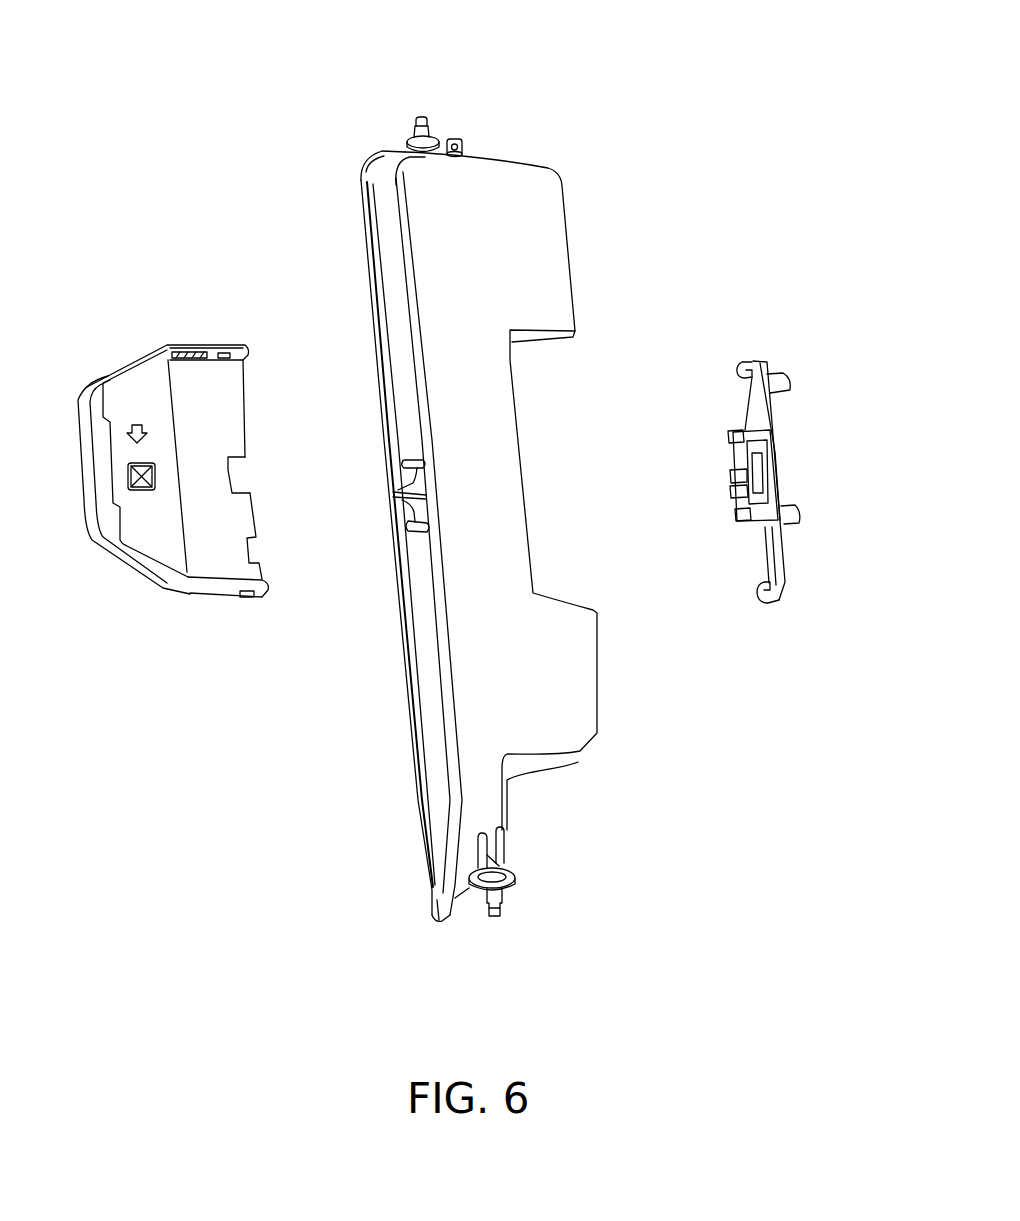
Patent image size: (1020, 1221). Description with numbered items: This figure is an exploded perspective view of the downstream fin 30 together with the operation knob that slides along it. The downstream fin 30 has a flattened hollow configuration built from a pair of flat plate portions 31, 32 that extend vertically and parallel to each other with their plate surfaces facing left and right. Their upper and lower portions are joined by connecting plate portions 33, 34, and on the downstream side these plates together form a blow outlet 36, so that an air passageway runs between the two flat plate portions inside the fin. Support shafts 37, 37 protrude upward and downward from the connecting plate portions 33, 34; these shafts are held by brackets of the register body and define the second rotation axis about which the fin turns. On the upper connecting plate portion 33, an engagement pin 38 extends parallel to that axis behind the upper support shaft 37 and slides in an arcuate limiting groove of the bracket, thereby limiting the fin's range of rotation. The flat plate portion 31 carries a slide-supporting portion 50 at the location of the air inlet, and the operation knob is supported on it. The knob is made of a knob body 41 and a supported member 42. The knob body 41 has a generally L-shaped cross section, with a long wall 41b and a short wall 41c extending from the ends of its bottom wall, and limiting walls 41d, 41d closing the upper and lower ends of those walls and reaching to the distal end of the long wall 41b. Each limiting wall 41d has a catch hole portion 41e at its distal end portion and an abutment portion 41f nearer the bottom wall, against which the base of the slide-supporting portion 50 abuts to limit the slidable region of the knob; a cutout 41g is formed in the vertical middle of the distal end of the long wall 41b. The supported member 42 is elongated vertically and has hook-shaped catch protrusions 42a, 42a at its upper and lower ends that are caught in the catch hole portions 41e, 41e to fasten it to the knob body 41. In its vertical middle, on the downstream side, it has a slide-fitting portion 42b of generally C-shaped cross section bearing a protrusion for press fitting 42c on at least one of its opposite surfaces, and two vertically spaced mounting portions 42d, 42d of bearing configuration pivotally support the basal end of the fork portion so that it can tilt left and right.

The downstream fin 30 is at (542, 131).
The flat plate portion 31 is at (421, 200).
The flat plate portion 32 is at (372, 229).
The connecting plate portion 33 is at (372, 160).
The connecting plate portion 34 is at (459, 848).
The blow outlet 36 is at (388, 273).
The support shaft 37 is at (432, 122).
The engagement pin 38 is at (456, 139).
The slide-supporting portion 50 is at (407, 457).
The knob body 41 is at (128, 350).
The long wall 41b is at (204, 560).
The short wall 41c is at (153, 528).
The limiting wall 41d is at (218, 345).
The catch hole portion 41e is at (226, 363).
The abutment portion 41f is at (190, 352).
The cutout 41g is at (236, 477).
The supported member 42 is at (762, 350).
The catch protrusion 42a is at (742, 360).
The slide-fitting portion 42b is at (726, 488).
The protrusion for press fitting 42c is at (730, 478).
The mounting portion 42d is at (790, 379).